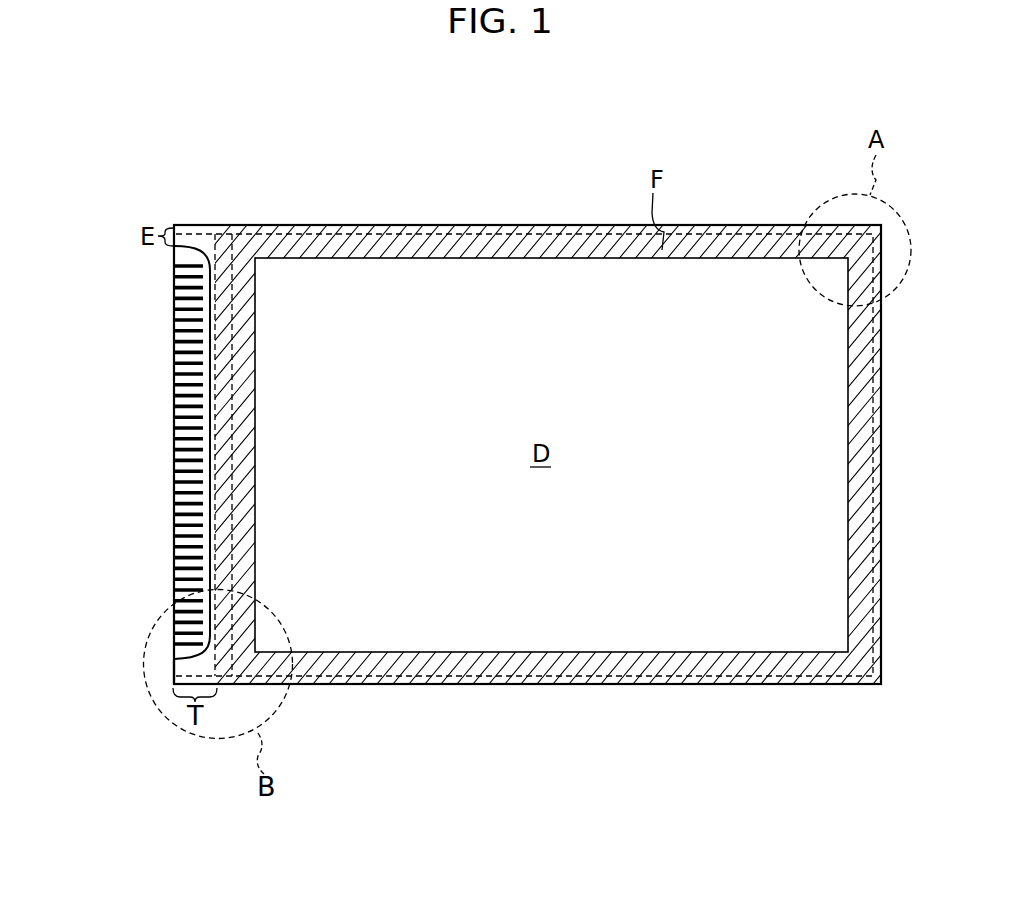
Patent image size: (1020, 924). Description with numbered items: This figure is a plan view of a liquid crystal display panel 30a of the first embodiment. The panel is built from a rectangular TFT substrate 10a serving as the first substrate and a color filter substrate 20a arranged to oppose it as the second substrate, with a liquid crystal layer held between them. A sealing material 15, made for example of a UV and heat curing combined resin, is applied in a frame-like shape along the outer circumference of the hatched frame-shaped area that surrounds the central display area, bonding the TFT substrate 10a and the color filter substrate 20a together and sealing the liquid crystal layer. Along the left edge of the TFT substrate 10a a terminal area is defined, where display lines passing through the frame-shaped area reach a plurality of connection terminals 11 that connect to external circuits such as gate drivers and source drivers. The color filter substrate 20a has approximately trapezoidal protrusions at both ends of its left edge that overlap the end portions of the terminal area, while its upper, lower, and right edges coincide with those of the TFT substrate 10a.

The liquid crystal display panel 30a is at (236, 142).
The sealing material 15 is at (720, 228).
The connection terminals 11 is at (173, 264).
The TFT substrate 10a is at (176, 652).
The color filter substrate 20a is at (173, 672).